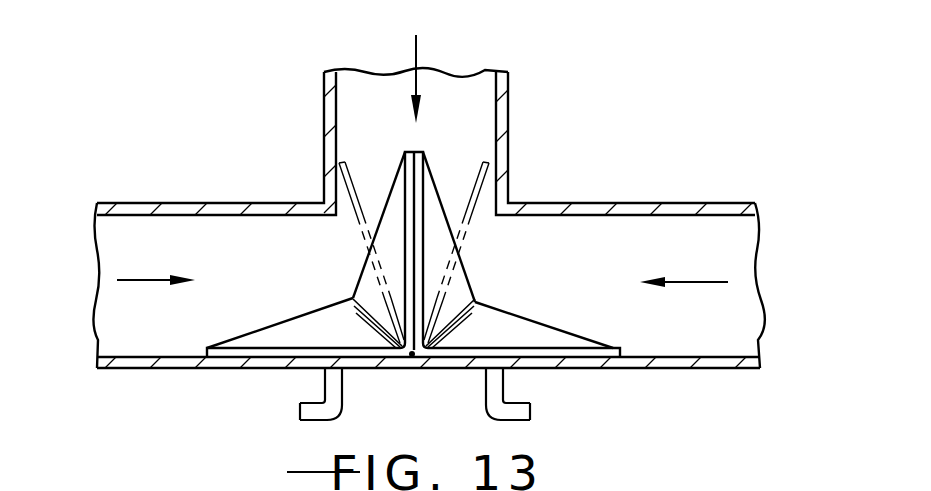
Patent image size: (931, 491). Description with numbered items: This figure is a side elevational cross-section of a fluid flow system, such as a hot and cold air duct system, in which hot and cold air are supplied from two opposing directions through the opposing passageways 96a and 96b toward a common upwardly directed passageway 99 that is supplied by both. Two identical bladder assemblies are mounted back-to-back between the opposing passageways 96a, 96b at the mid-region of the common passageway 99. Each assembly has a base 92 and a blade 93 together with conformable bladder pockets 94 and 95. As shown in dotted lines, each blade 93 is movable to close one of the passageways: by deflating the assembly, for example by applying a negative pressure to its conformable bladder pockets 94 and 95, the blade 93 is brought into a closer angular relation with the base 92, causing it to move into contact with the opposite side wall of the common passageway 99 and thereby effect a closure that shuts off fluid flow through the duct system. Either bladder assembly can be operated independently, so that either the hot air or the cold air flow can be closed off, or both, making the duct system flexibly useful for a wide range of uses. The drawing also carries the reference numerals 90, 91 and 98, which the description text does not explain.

The tee pipe housing 90 is at (612, 204).
The drain tubes 91 is at (410, 358).
The base 92 is at (250, 357).
The blade 93 is at (423, 178).
The conformable bladder pocket 94 is at (263, 326).
The conformable bladder pocket 95 is at (367, 262).
The opposing passageway 96a is at (188, 333).
The opposing passageway 96b is at (737, 338).
The bent flanges 98 is at (353, 297).
The common passageway 99 is at (448, 107).